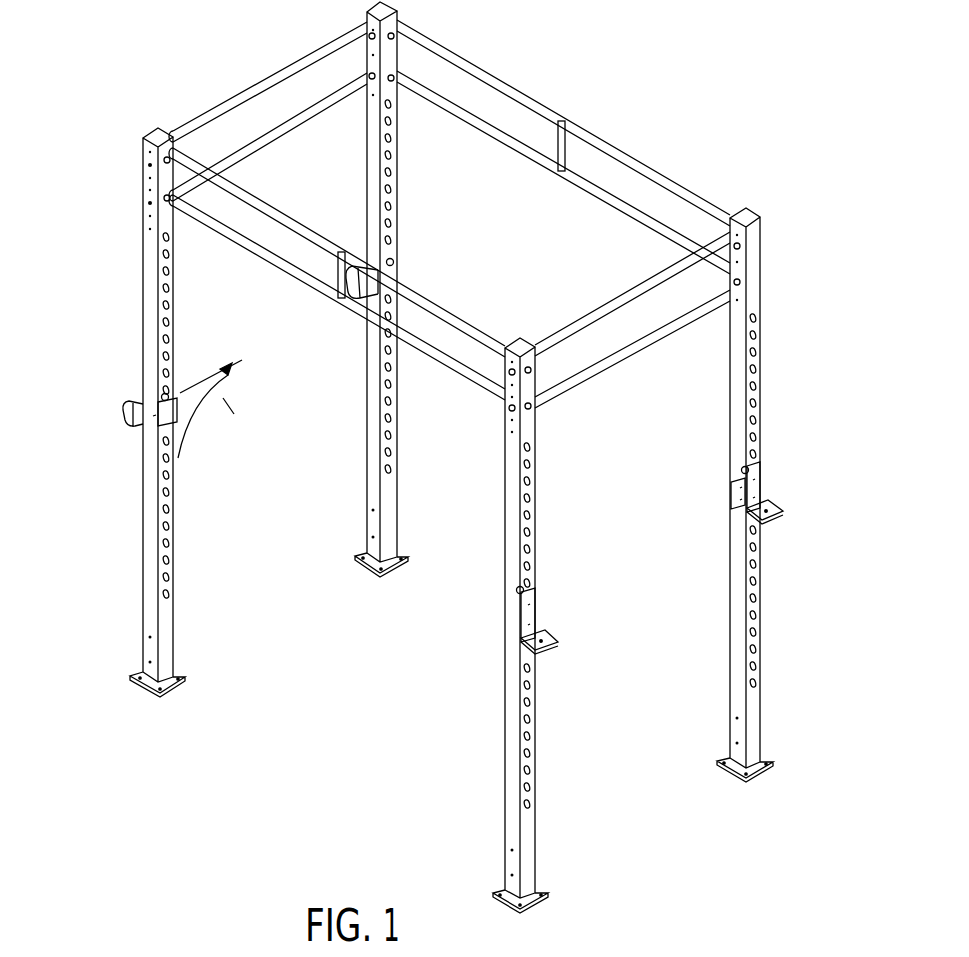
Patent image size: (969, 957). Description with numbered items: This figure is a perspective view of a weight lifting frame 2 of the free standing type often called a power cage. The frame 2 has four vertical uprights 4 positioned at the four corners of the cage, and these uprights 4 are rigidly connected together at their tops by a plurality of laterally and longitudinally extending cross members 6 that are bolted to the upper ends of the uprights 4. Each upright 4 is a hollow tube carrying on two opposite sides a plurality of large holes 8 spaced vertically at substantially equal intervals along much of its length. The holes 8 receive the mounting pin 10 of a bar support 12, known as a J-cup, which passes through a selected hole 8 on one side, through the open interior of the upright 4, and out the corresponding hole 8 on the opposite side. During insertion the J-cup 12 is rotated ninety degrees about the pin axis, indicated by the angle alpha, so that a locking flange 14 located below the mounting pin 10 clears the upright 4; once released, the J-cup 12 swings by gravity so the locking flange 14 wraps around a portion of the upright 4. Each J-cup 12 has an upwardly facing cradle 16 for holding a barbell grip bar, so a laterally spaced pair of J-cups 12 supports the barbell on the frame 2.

The weight lifting frame 2 is at (585, 110).
The vertical upright 4 is at (130, 625).
The cross member 6 is at (617, 151).
The large hole 8 is at (162, 299).
The mounting pin 10 is at (400, 258).
The bar support 12 is at (776, 475).
The locking flange 14 is at (356, 291).
The cradle 16 is at (770, 510).